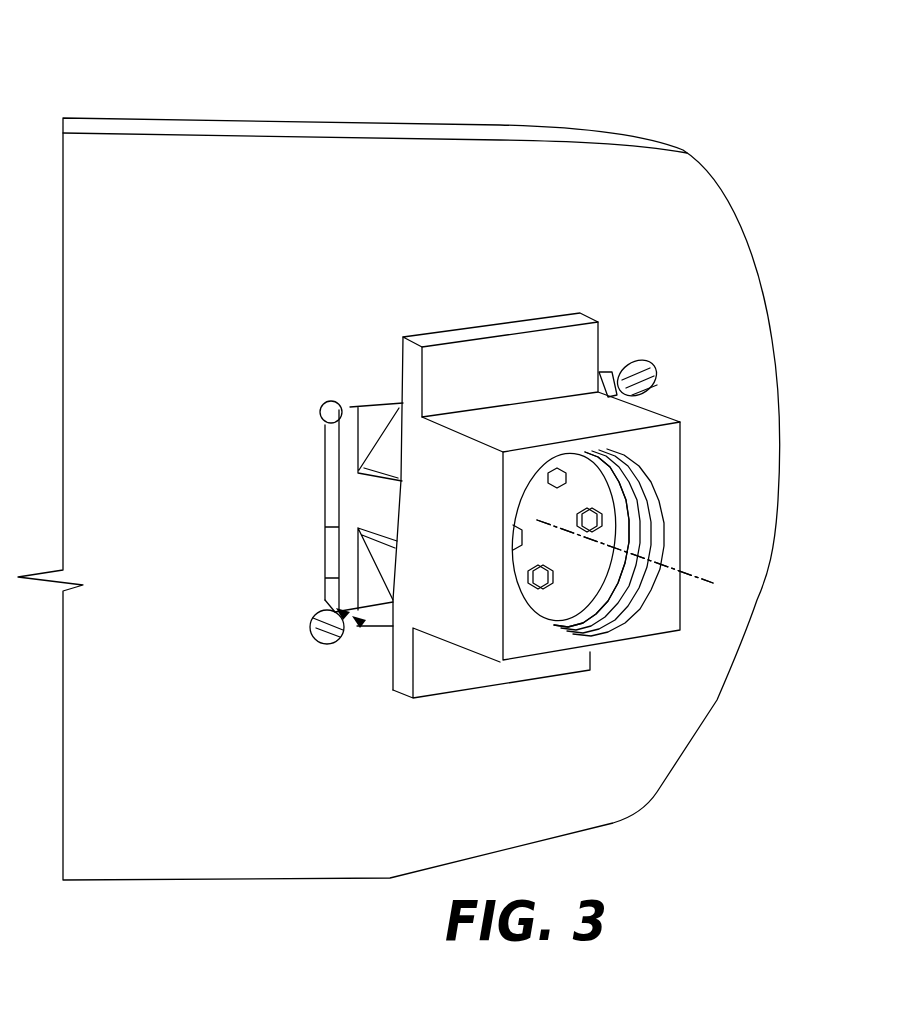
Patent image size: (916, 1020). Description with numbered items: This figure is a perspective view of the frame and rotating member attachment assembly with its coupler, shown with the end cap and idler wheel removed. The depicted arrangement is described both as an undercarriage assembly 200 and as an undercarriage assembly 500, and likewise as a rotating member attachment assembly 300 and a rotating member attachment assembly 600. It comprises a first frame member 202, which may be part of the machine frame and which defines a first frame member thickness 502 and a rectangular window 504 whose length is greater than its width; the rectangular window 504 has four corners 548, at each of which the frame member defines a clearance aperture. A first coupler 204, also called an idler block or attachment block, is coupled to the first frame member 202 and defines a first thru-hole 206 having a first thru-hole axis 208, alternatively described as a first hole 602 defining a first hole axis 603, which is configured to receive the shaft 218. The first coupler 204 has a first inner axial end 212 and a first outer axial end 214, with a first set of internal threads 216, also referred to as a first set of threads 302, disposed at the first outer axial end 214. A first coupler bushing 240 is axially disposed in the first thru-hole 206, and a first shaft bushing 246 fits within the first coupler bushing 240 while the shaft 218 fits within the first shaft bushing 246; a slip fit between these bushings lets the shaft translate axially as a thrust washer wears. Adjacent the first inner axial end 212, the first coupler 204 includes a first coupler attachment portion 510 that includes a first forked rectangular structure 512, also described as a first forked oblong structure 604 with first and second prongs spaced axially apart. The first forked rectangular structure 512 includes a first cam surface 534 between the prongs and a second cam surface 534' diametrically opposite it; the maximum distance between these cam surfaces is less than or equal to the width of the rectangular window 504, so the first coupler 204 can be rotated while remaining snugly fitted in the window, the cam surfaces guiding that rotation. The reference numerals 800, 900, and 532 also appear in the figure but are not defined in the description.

The undercarriage assembly 200 is at (523, 88).
The rotating member attachment assembly 300 is at (627, 100).
The undercarriage assembly 500 is at (740, 148).
The rotating member attachment assembly 600 is at (773, 205).
The airflow 800 is at (788, 260).
The airflow 900 is at (805, 323).
The first frame member 202 is at (518, 222).
The first coupler attachment portion 510 is at (437, 330).
The first forked rectangular structure 512 is at (503, 317).
The first forked oblong structure 604 is at (560, 313).
The rectangular window 504 is at (604, 375).
The four corners 548 is at (645, 370).
The housing top face 532 is at (690, 417).
The first coupler 204 is at (667, 630).
The first inner axial end 212 is at (325, 425).
The first frame member thickness 502 is at (343, 637).
The first cam surface 534 is at (334, 453).
The second cam surface 534' is at (325, 569).
The first outer axial end 214 is at (528, 640).
The first coupler bushing 240 is at (598, 580).
The first shaft bushing 246 is at (588, 551).
The first thru-hole 206 is at (633, 510).
The first hole 602 is at (660, 539).
The first set of internal threads 216 is at (660, 522).
The shaft 218 is at (625, 456).
The first set of threads 302 is at (657, 578).
The first thru-hole axis 208 is at (693, 575).
The first hole axis 603 is at (697, 566).